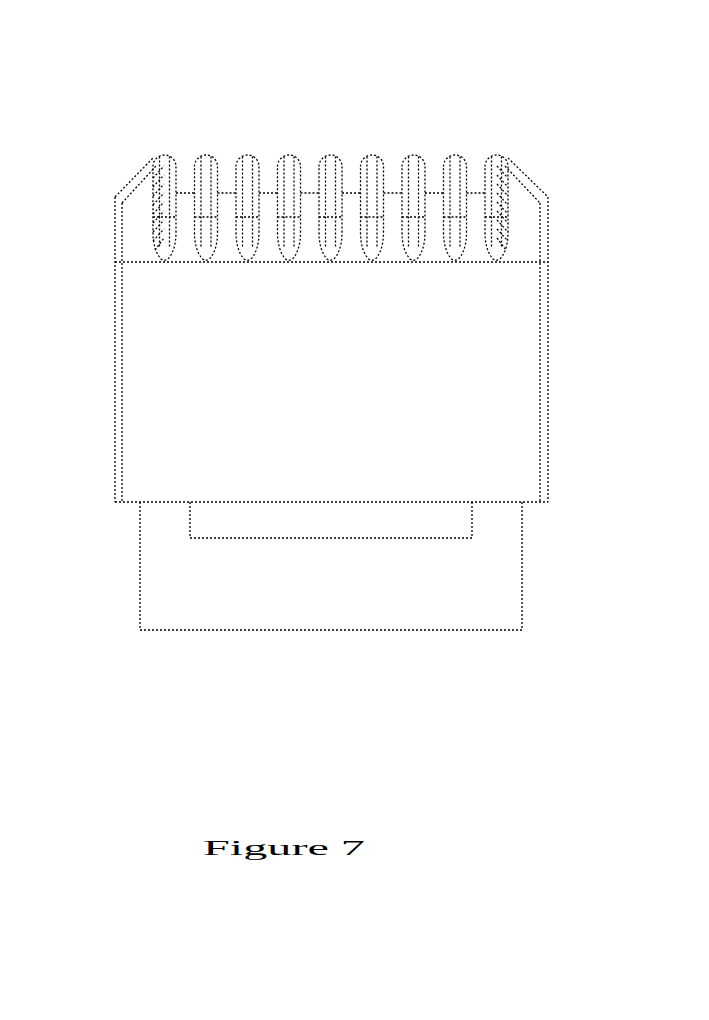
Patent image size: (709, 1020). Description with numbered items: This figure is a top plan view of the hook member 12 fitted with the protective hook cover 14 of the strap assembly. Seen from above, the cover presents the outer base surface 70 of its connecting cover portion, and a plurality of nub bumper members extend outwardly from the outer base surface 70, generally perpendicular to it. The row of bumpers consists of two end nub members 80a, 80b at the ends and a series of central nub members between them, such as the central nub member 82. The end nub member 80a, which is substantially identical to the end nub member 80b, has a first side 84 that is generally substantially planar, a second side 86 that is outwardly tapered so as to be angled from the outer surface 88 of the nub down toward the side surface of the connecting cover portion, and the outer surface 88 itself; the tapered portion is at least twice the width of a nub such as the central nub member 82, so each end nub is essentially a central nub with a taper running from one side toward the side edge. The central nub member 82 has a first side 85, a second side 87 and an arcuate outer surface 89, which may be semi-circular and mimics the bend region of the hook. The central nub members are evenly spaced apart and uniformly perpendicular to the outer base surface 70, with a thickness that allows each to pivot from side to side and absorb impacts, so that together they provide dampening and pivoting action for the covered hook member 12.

The hook member 12 is at (280, 630).
The protective hook cover 14 is at (346, 315).
The outer base surface 70 is at (185, 196).
The end nub member 80a is at (566, 137).
The end nub member 80b is at (121, 171).
The central nub member 82 is at (325, 135).
The first side 84 is at (526, 173).
The first side 85 is at (325, 177).
The second side 86 is at (451, 172).
The second side 87 is at (272, 186).
The outer surface 88 is at (496, 156).
The outer surface 89 is at (288, 153).